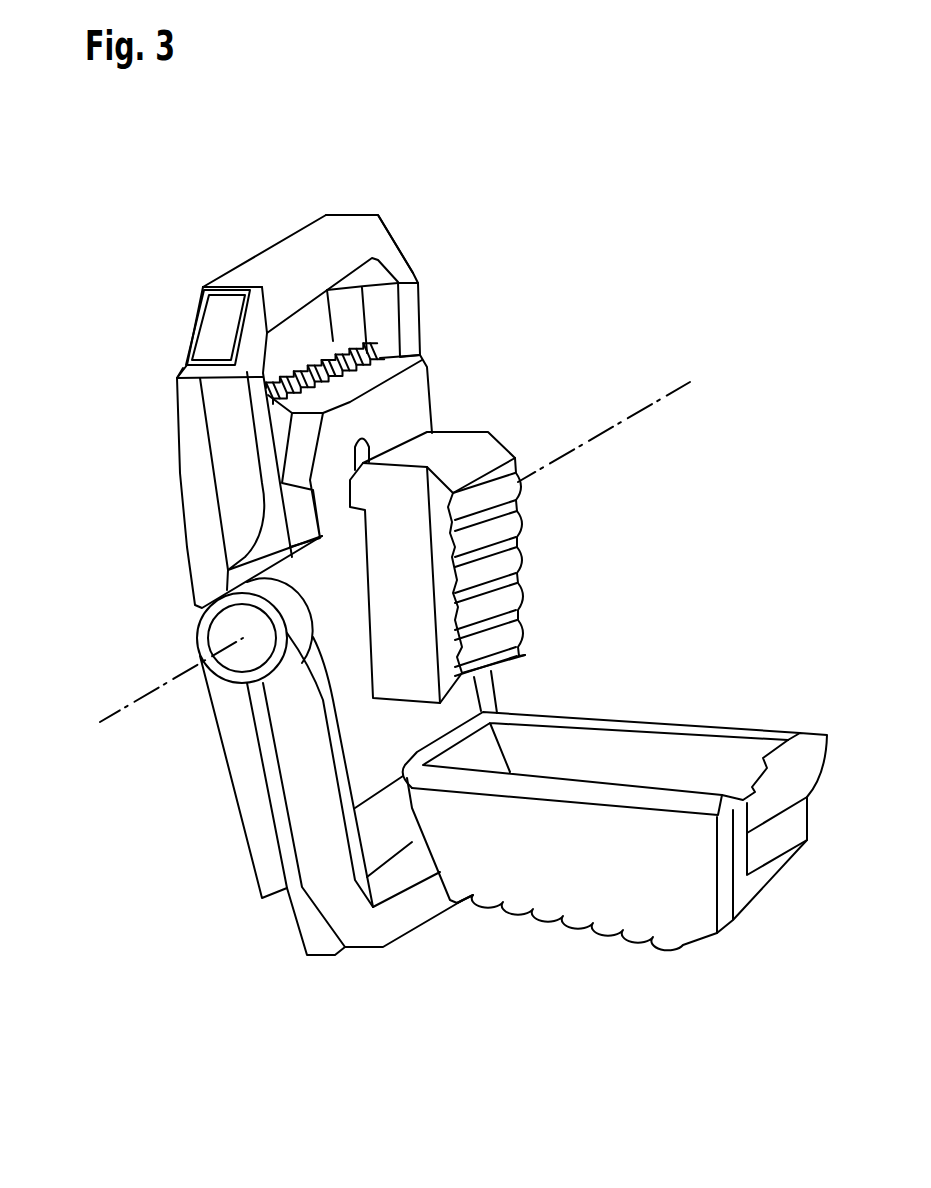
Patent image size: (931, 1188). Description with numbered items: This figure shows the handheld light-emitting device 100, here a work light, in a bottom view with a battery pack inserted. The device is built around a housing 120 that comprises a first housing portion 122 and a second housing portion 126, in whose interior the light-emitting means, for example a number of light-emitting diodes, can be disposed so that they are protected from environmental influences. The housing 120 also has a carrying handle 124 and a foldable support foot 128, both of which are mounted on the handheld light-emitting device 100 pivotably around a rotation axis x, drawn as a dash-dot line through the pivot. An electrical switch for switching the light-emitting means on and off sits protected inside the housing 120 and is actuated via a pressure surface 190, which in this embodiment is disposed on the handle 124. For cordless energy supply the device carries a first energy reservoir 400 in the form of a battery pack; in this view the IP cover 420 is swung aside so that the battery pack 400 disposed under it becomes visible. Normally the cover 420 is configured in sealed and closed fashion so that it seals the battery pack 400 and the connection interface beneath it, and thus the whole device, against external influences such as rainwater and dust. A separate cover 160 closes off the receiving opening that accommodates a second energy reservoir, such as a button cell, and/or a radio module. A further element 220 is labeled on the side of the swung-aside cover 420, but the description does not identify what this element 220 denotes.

The handheld light-emitting device 100 is at (603, 537).
The housing 120 is at (132, 288).
The first housing portion 122 is at (183, 368).
The carrying handle 124 is at (375, 240).
The second housing portion 126 is at (333, 447).
The foldable support foot 128 is at (403, 912).
The cover 160 is at (362, 440).
The pressure surface 190 is at (215, 322).
The first energy reservoir 400 is at (410, 663).
The cover 420 is at (622, 875).
The bracket 220 is at (768, 840).